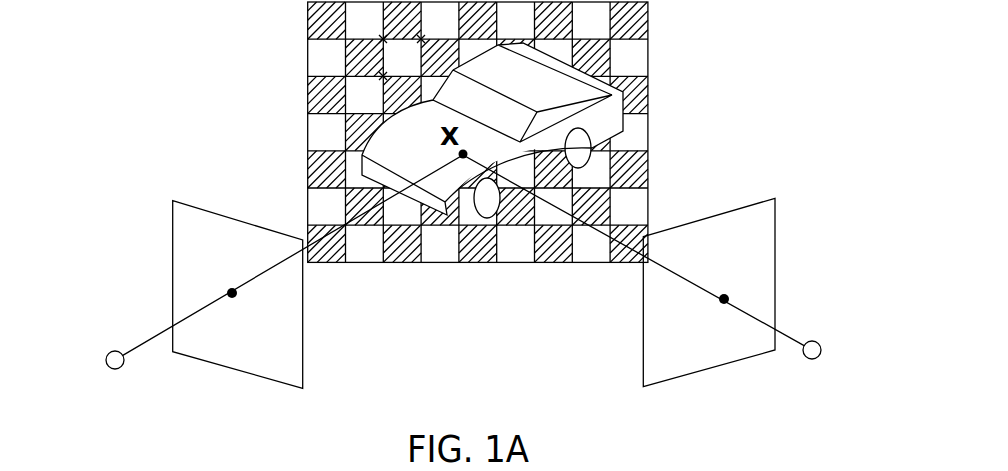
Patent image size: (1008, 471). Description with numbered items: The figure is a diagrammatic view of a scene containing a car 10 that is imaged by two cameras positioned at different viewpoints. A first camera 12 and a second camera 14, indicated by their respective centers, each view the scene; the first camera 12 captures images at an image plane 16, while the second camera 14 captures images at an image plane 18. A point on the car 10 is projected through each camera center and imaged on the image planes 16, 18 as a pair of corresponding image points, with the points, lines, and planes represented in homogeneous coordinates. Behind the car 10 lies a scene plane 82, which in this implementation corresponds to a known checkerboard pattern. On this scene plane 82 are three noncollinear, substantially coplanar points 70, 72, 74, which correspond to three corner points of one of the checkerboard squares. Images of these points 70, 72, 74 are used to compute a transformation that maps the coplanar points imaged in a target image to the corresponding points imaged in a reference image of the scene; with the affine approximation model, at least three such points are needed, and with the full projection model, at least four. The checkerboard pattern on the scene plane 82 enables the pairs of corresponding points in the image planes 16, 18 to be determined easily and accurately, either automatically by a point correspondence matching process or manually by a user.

The car 10 is at (622, 130).
The first camera 12 is at (103, 357).
The second camera 14 is at (822, 348).
The image plane 16 is at (172, 247).
The image plane 18 is at (712, 215).
The noncollinear coplanar scene plane point 70 is at (421, 39).
The noncollinear coplanar scene plane point 72 is at (383, 39).
The noncollinear coplanar scene plane point 74 is at (383, 76).
The scene plane 82 is at (648, 60).